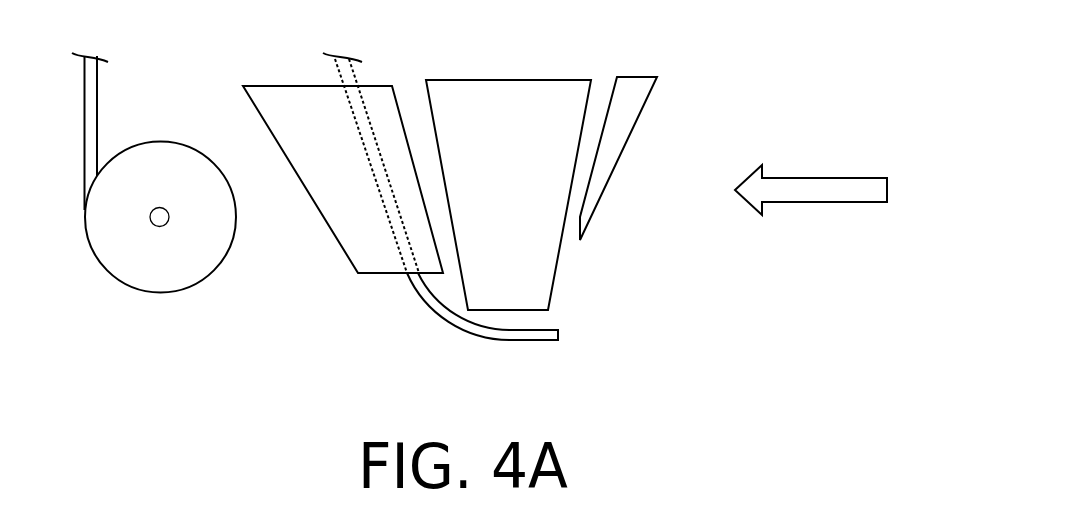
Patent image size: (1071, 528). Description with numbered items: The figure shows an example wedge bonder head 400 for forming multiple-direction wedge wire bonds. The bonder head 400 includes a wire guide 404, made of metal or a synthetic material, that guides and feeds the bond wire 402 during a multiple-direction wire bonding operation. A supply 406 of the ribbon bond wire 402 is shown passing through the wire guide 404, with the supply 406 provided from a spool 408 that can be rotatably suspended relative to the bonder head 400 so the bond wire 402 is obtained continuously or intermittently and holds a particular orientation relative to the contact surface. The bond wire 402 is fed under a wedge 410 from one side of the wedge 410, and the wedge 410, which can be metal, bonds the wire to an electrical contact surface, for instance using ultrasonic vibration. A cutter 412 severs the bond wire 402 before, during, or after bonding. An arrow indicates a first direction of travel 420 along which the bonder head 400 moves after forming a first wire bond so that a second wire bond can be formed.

The wedge bonder head 400 is at (724, 63).
The bond wire 402 is at (437, 320).
The wire guide 404 is at (338, 242).
The supply of bond wire 406 is at (363, 144).
The spool 408 is at (203, 258).
The wedge 410 is at (555, 277).
The cutter 412 is at (617, 167).
The first direction of travel 420 is at (855, 203).